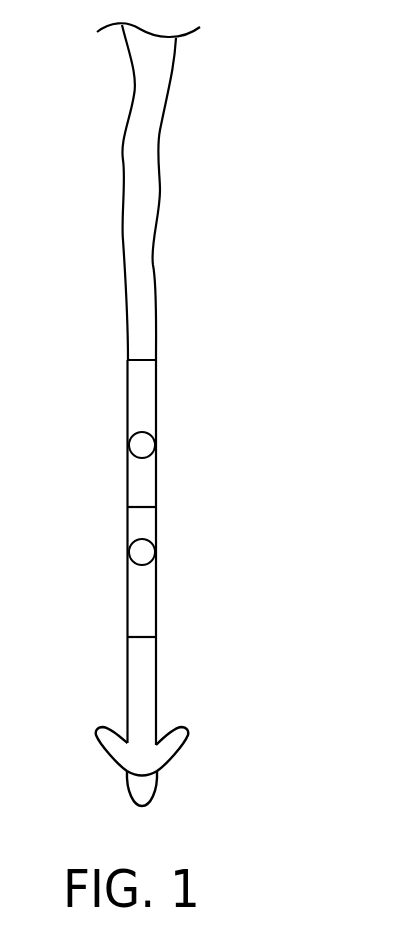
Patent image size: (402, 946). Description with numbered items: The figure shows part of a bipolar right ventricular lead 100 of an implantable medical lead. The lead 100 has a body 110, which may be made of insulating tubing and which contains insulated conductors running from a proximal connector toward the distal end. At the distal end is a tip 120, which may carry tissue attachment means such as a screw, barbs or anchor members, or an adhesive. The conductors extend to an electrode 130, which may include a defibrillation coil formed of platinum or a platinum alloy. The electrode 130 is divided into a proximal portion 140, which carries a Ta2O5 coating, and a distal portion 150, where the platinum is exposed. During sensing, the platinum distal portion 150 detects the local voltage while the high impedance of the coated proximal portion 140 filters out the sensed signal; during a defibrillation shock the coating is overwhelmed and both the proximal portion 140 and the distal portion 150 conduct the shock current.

The right ventricular lead 100 is at (192, 414).
The body 110 is at (147, 282).
The tip 120 is at (170, 753).
The electrode 130 is at (146, 500).
The proximal portion 140 is at (135, 476).
The distal portion 150 is at (135, 603).